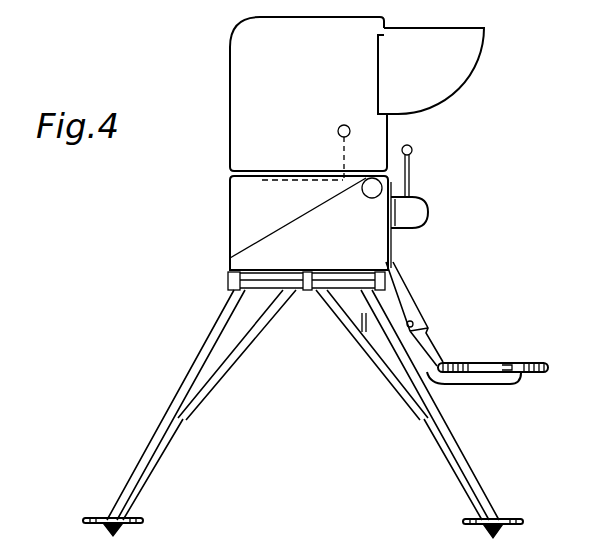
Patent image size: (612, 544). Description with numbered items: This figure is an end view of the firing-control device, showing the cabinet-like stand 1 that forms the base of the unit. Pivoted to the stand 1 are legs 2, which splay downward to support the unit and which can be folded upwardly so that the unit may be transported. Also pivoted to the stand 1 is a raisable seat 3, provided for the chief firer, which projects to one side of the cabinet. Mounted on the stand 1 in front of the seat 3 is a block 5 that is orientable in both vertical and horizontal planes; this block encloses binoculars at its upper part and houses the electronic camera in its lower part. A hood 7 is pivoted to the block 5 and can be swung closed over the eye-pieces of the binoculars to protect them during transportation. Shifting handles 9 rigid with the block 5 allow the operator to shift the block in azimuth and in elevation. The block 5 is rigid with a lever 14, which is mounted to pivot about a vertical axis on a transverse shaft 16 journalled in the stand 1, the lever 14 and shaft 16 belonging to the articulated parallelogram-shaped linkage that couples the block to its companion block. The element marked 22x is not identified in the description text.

The stand 1 is at (228, 249).
The legs 2 is at (168, 438).
The seat 3 is at (508, 367).
The block 5 is at (227, 118).
The hood 7 is at (460, 70).
The shifting handles 9 is at (350, 130).
The lever 14 is at (292, 180).
The transverse shaft 16 is at (266, 180).
The lever 22x is at (413, 176).